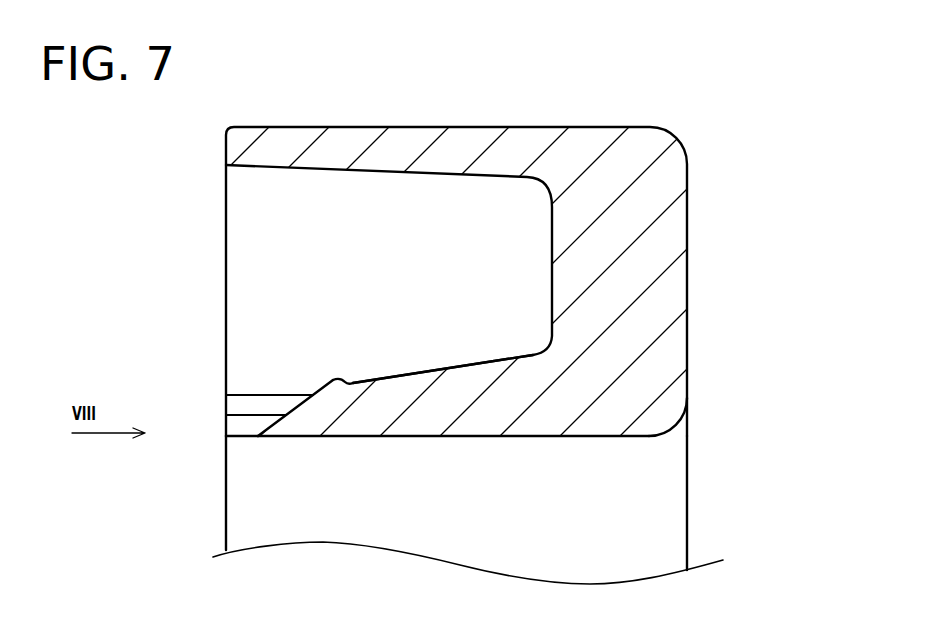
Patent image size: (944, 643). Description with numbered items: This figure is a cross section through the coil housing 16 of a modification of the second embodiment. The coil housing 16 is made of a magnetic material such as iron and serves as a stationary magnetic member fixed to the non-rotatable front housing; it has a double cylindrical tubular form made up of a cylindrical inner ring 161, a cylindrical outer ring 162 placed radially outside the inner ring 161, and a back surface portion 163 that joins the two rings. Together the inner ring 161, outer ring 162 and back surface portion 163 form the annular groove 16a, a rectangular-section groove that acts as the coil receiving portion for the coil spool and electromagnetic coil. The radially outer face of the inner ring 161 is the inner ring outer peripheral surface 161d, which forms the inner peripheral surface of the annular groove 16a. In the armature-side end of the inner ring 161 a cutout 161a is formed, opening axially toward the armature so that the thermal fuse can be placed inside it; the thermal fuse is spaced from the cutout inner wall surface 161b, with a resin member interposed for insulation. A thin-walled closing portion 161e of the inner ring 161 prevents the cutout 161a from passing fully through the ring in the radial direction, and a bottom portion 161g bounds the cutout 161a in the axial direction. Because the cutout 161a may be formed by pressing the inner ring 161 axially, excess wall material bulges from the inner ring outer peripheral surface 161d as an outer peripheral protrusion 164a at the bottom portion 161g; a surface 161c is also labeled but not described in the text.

The coil housing 16 is at (624, 126).
The annular groove 16a is at (275, 202).
The outer ring 162 is at (460, 140).
The back surface portion 163 is at (670, 285).
The inner ring 161 is at (462, 422).
The cutout 161a is at (262, 393).
The cutout inner wall surface 161b is at (257, 414).
The bottom surface 161c is at (617, 436).
The inner ring outer peripheral surface 161d is at (430, 372).
The closing portion 161e is at (245, 426).
The bottom portion 161g is at (302, 399).
The outer peripheral protrusion 164a is at (332, 380).